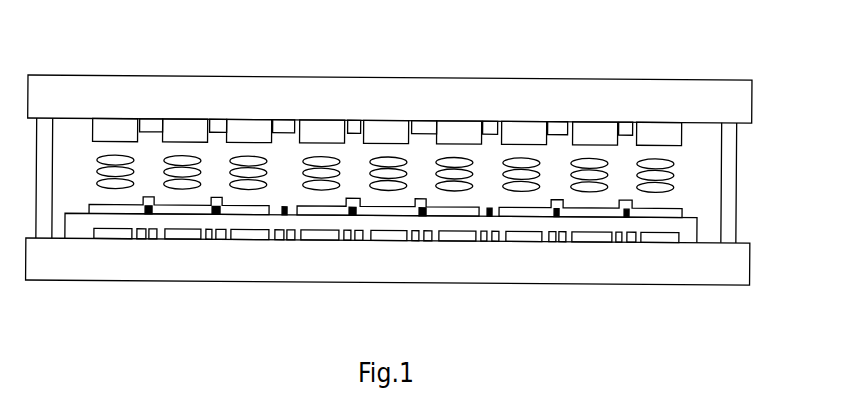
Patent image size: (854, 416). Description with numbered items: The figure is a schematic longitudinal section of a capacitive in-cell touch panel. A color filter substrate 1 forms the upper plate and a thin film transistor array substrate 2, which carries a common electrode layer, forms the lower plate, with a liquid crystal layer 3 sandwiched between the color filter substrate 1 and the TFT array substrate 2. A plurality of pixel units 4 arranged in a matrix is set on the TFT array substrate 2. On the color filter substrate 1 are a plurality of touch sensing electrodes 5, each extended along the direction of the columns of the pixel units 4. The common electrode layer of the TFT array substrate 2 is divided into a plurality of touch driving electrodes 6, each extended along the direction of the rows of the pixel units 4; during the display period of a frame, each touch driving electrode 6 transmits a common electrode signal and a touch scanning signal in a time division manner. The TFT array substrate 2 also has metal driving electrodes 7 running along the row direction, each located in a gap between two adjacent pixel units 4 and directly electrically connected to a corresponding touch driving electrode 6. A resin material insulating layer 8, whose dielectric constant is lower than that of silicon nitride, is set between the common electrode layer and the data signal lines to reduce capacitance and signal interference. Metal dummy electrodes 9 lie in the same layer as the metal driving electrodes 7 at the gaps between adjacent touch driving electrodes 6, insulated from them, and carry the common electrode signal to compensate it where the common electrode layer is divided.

The color filter substrate 1 is at (742, 100).
The thin film transistor (TFT) array substrate 2 is at (772, 238).
The liquid crystal layer 3 is at (675, 175).
The pixel units 4 is at (660, 234).
The touch sensing electrodes 5 is at (387, 31).
The touch driving electrodes 6 is at (195, 215).
The metal driving electrodes 7 is at (353, 214).
The resin material insulating layer 8 is at (571, 222).
The metal dummy electrodes 9 is at (490, 214).